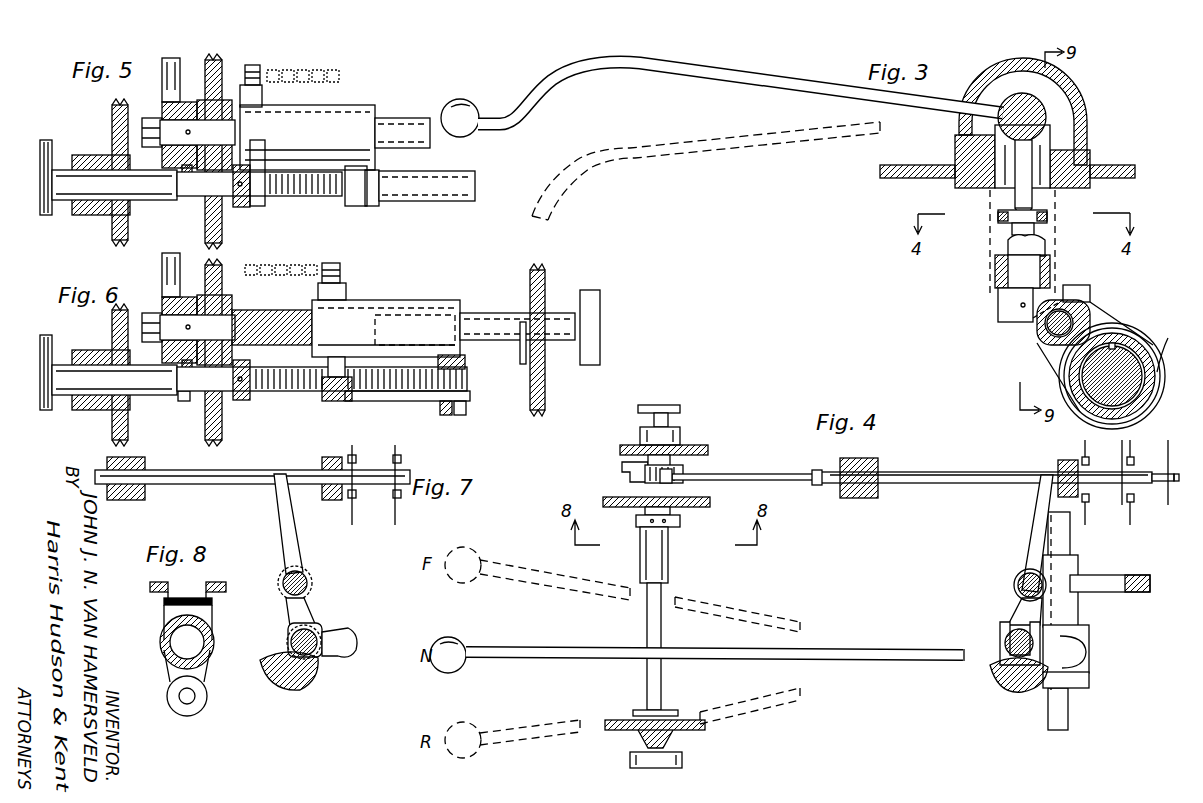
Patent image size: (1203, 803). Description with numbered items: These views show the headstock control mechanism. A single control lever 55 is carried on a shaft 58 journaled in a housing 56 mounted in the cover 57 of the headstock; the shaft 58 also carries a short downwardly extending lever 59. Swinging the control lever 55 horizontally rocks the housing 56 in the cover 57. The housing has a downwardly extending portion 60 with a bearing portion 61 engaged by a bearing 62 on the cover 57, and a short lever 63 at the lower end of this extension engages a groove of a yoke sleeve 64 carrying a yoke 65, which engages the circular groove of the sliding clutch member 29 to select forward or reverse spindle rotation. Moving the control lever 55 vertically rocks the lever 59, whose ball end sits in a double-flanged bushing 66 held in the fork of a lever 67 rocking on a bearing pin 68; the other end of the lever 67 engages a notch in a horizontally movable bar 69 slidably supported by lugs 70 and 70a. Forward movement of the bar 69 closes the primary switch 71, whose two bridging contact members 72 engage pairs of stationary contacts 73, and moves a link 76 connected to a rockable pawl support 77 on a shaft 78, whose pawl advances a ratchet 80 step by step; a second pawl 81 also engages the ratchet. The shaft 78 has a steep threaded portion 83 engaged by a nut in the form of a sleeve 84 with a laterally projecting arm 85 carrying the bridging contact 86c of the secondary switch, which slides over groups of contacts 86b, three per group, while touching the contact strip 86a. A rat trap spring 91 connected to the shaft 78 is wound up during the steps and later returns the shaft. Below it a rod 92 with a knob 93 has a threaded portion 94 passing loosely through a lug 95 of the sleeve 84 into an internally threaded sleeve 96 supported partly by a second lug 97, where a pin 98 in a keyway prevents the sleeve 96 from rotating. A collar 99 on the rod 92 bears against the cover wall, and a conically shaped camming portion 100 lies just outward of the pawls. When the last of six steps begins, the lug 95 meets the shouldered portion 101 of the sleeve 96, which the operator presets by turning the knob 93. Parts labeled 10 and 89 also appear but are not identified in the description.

In FIG. 5, the frame plate 10 is at (197, 246).
In FIG. 6, the frame plate 10 is at (194, 437).
In FIG. 3, the clutch member 29 is at (1172, 345).
In FIG. 3, the control lever 55 is at (725, 72).
In FIG. 4, the control lever 55 is at (872, 650).
In FIG. 3, the housing 56 is at (1080, 128).
In FIG. 3, the cover 57 is at (1105, 165).
In FIG. 4, the cover 57 is at (700, 448).
In FIG. 3, the shaft 58 is at (1040, 108).
In FIG. 7, the short downwardly extending lever 59 is at (316, 635).
In FIG. 3, the short downwardly extending lever 59 is at (1032, 195).
In FIG. 4, the short downwardly extending lever 59 is at (1006, 638).
In FIG. 7, the downwardly extending portion 60 is at (285, 690).
In FIG. 3, the downwardly extending portion 60 is at (1042, 244).
In FIG. 4, the downwardly extending portion 60 is at (1015, 692).
In FIG. 3, the bearing portion 61 is at (1000, 282).
In FIG. 3, the bearing 62 is at (1033, 278).
In FIG. 7, the short lever 63 is at (350, 630).
In FIG. 3, the short lever 63 is at (1090, 308).
In FIG. 4, the short lever 63 is at (1088, 648).
In FIG. 3, the yoke sleeve 64 is at (1078, 286).
In FIG. 4, the yoke sleeve 64 is at (1088, 680).
In FIG. 3, the yoke 65 is at (1125, 330).
In FIG. 4, the yoke 65 is at (1125, 578).
In FIG. 7, the double-flanged bushing 66 is at (310, 625).
In FIG. 3, the double-flanged bushing 66 is at (1014, 232).
In FIG. 4, the double-flanged bushing 66 is at (1002, 652).
In FIG. 7, the lever 67 is at (298, 560).
In FIG. 3, the lever 67 is at (1000, 220).
In FIG. 4, the lever 67 is at (1020, 608).
In FIG. 7, the bearing pin 68 is at (310, 583).
In FIG. 4, the bearing pin 68 is at (1015, 582).
In FIG. 7, the horizontally movable bar 69 is at (212, 480).
In FIG. 4, the horizontally movable bar 69 is at (998, 484).
In FIG. 7, the lug 70 is at (122, 500).
In FIG. 4, the lug 70 is at (878, 462).
In FIG. 7, the lug 70a is at (322, 462).
In FIG. 4, the lug 70a is at (1058, 462).
In FIG. 7, the main or primary switch 71 is at (374, 486).
In FIG. 4, the main or primary switch 71 is at (1146, 476).
In FIG. 4, the bridging contact members 72 is at (1165, 500).
In FIG. 4, the stationary contacts 73 is at (1090, 500).
In FIG. 4, the link 76 is at (760, 474).
In FIG. 5, the rockable pawl support 77 is at (178, 90).
In FIG. 6, the rockable pawl support 77 is at (165, 282).
In FIG. 4, the rockable pawl support 77 is at (630, 462).
In FIG. 5, the shaft 78 is at (398, 118).
In FIG. 6, the shaft 78 is at (478, 313).
In FIG. 4, the shaft 78 is at (647, 615).
In FIG. 5, the ratchet 80 is at (182, 118).
In FIG. 6, the ratchet 80 is at (183, 314).
In FIG. 5, the pawl 81 is at (188, 196).
In FIG. 6, the pawl 81 is at (192, 391).
In FIG. 6, the steep threaded portion 83 is at (268, 310).
In FIG. 5, the sleeve 84 is at (372, 102).
In FIG. 6, the sleeve 84 is at (420, 300).
In FIG. 8, the sleeve 84 is at (212, 660).
In FIG. 4, the sleeve 84 is at (668, 560).
In FIG. 5, the laterally projecting arm 85 is at (262, 100).
In FIG. 6, the laterally projecting arm 85 is at (346, 292).
In FIG. 8, the laterally projecting arm 85 is at (212, 620).
In FIG. 8, the contact strip 86a is at (222, 582).
In FIG. 5, the contacts 86b is at (339, 72).
In FIG. 6, the contacts 86b is at (308, 250).
In FIG. 8, the contacts 86b is at (152, 592).
In FIG. 5, the bridging contact 86c is at (245, 70).
In FIG. 6, the bridging contact 86c is at (340, 270).
In FIG. 8, the bridging contact 86c is at (212, 602).
In FIG. 4, the bridging contact 86c is at (636, 522).
In FIG. 6, the collar 89 is at (600, 303).
In FIG. 4, the collar 89 is at (665, 768).
In FIG. 6, the rat trap spring 91 is at (521, 364).
In FIG. 4, the rat trap spring 91 is at (660, 710).
In FIG. 5, the rod 92 is at (150, 200).
In FIG. 6, the rod 92 is at (150, 395).
In FIG. 5, the knob 93 is at (48, 215).
In FIG. 6, the knob 93 is at (48, 410).
In FIG. 4, the knob 93 is at (672, 408).
In FIG. 5, the threaded portion 94 is at (315, 196).
In FIG. 6, the threaded portion 94 is at (296, 391).
In FIG. 5, the lug 95 is at (260, 206).
In FIG. 6, the lug 95 is at (333, 401).
In FIG. 8, the lug 95 is at (204, 702).
In FIG. 5, the internally threaded sleeve 96 is at (440, 201).
In FIG. 6, the internally threaded sleeve 96 is at (465, 362).
In FIG. 5, the second lug 97 is at (372, 206).
In FIG. 6, the second lug 97 is at (460, 415).
In FIG. 6, the pin 98 is at (446, 415).
In FIG. 5, the collar 99 is at (241, 207).
In FIG. 6, the collar 99 is at (241, 400).
In FIG. 6, the conically shaped camming portion 100 is at (184, 401).
In FIG. 5, the shouldered portion 101 is at (352, 206).
In FIG. 6, the shouldered portion 101 is at (360, 401).